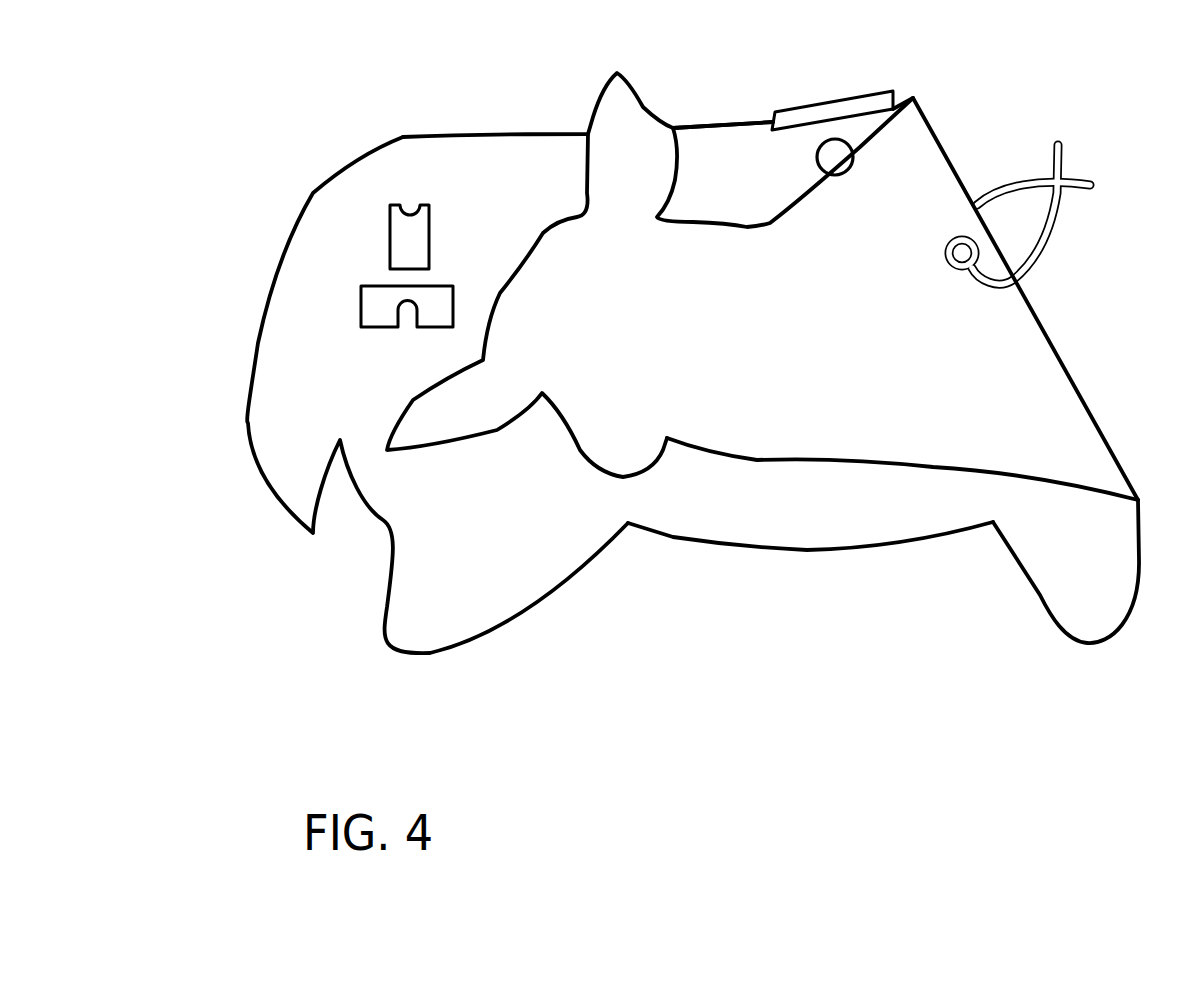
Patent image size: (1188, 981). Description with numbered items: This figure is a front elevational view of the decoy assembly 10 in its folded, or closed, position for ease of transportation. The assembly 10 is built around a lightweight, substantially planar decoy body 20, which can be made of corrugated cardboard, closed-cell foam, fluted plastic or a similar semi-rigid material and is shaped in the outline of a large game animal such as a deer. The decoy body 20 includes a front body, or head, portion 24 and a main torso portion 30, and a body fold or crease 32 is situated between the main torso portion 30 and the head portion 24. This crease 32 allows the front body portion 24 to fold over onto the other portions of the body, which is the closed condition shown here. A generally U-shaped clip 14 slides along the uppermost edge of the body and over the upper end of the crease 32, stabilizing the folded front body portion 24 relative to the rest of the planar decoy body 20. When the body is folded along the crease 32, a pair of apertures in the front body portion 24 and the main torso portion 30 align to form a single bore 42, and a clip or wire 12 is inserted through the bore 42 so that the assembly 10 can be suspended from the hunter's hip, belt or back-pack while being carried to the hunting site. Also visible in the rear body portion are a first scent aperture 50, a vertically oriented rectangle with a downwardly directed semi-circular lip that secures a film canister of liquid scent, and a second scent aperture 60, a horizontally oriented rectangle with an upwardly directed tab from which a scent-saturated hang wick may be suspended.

The decoy assembly 10 is at (701, 339).
The wire 12 is at (1050, 237).
The U-shaped clip 14 is at (852, 100).
The planar decoy body 20 is at (733, 143).
The front body portion 24 is at (813, 428).
The main torso portion 30 is at (755, 502).
The body crease 32 is at (1092, 415).
The bore 42 is at (952, 247).
The first scent aperture 50 is at (390, 227).
The second scent aperture 60 is at (360, 312).